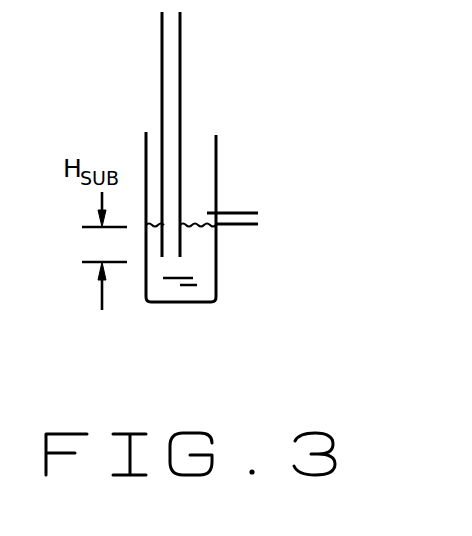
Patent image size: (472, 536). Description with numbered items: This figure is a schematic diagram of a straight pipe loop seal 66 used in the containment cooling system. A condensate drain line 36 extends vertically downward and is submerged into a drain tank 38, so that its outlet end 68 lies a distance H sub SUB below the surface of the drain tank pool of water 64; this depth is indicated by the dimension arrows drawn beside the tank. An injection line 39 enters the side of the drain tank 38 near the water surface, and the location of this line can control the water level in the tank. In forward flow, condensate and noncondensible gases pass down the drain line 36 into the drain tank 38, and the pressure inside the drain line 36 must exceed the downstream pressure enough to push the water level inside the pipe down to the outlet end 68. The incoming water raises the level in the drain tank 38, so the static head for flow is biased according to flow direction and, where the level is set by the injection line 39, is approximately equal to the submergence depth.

The condensate drain line 36 is at (180, 52).
The straight pipe loop seal 66 is at (200, 108).
The drain tank 38 is at (216, 162).
The injection line 39 is at (246, 226).
The drain tank pool of water 64 is at (207, 262).
The outlet end 68 is at (165, 262).